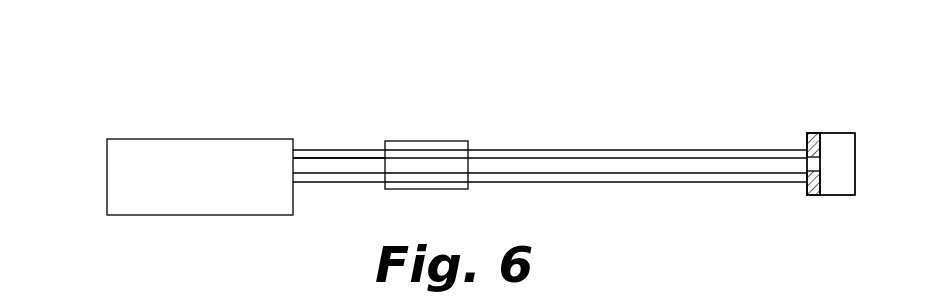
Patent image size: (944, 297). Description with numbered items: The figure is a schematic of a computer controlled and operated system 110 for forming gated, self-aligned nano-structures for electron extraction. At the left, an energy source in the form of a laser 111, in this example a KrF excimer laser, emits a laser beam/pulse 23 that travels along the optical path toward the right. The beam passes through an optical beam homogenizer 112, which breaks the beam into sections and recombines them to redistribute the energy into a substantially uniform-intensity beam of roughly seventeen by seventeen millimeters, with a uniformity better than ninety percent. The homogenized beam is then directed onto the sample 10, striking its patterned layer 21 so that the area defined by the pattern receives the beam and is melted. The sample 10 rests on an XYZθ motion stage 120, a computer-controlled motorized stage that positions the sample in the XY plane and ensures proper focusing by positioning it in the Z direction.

The computer controlled and operated system 110 is at (142, 69).
The laser 111 is at (107, 178).
The laser beam/pulse 23 is at (350, 156).
The optical beam homogenizer 112 is at (427, 141).
The patterned layer 21 is at (808, 135).
The sample 10 is at (817, 130).
The XYZθ motion stage 120 is at (835, 133).